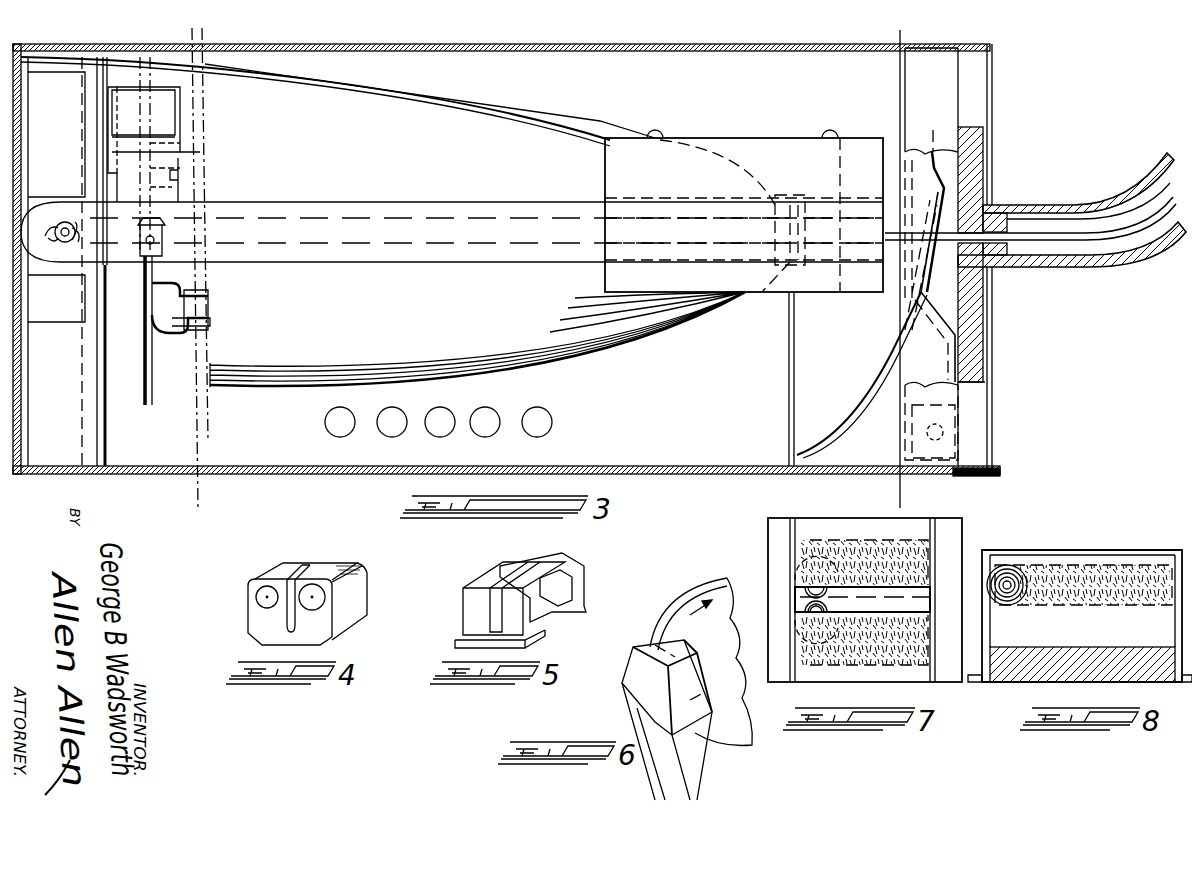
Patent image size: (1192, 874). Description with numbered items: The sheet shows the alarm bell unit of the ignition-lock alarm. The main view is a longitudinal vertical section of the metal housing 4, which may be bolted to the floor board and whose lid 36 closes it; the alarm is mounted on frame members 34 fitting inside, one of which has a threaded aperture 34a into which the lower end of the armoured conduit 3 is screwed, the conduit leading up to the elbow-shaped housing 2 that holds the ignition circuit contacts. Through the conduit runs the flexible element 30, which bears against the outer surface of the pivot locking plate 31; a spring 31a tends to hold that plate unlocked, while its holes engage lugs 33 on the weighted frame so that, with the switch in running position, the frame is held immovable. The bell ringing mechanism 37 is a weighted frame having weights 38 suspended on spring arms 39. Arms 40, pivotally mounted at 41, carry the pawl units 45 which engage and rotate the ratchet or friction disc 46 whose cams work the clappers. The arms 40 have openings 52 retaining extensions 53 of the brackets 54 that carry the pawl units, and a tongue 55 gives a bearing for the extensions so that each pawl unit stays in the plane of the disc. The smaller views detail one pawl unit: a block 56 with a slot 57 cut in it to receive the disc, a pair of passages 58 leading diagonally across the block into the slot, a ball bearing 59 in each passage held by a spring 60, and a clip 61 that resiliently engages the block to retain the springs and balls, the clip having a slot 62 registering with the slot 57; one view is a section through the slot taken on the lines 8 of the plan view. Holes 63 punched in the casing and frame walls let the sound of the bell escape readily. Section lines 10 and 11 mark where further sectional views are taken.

In FIG. 3, the elbow-shaped housing 2 is at (900, 30).
In FIG. 3, the armoured conduit 3 is at (1067, 208).
In FIG. 3, the metal housing 4 is at (357, 473).
In FIG. 7, the section lines 8 is at (748, 590).
In FIG. 3, the section line 10- 10 is at (192, 30).
In FIG. 3, the section line 11- 11 is at (202, 30).
In FIG. 3, the flexible element 30 is at (1060, 236).
In FIG. 3, the pivot locking plate 31 is at (933, 288).
In FIG. 3, the spring 31a is at (887, 363).
In FIG. 3, the lugs 33 is at (900, 283).
In FIG. 3, the frame members 34 is at (109, 444).
In FIG. 3, the threaded aperture 34a is at (996, 202).
In FIG. 3, the lid 36 is at (982, 375).
In FIG. 3, the bell ringing mechanism 37 is at (480, 363).
In FIG. 3, the weights 38 is at (782, 158).
In FIG. 3, the spring arms 39 is at (524, 112).
In FIG. 3, the arms 40 is at (262, 265).
In FIG. 3, the pivot 41 is at (65, 225).
In FIG. 6, the pawl units 45 is at (705, 738).
In FIG. 6, the ratchet or friction disc 46 is at (683, 600).
In FIG. 3, the openings 52 is at (164, 231).
In FIG. 3, the extensions 53 is at (136, 283).
In FIG. 3, the brackets 54 is at (176, 182).
In FIG. 3, the tongue 55 is at (160, 256).
In FIG. 4, the blocks 56 is at (358, 600).
In FIG. 7, the blocks 56 is at (822, 540).
In FIG. 8, the blocks 56 is at (1015, 682).
In FIG. 4, the slots 57 is at (307, 568).
In FIG. 7, the slots 57 is at (793, 605).
In FIG. 4, the passages 58 is at (318, 602).
In FIG. 7, the passages 58 is at (864, 553).
In FIG. 7, the ball bearing 59 is at (808, 585).
In FIG. 8, the ball bearing 59 is at (1012, 580).
In FIG. 7, the spring 60 is at (893, 650).
In FIG. 8, the spring 60 is at (1140, 565).
In FIG. 5, the clips 61 is at (560, 568).
In FIG. 6, the clips 61 is at (702, 668).
In FIG. 5, the slots 62 is at (520, 561).
In FIG. 3, the holes 63 is at (556, 413).